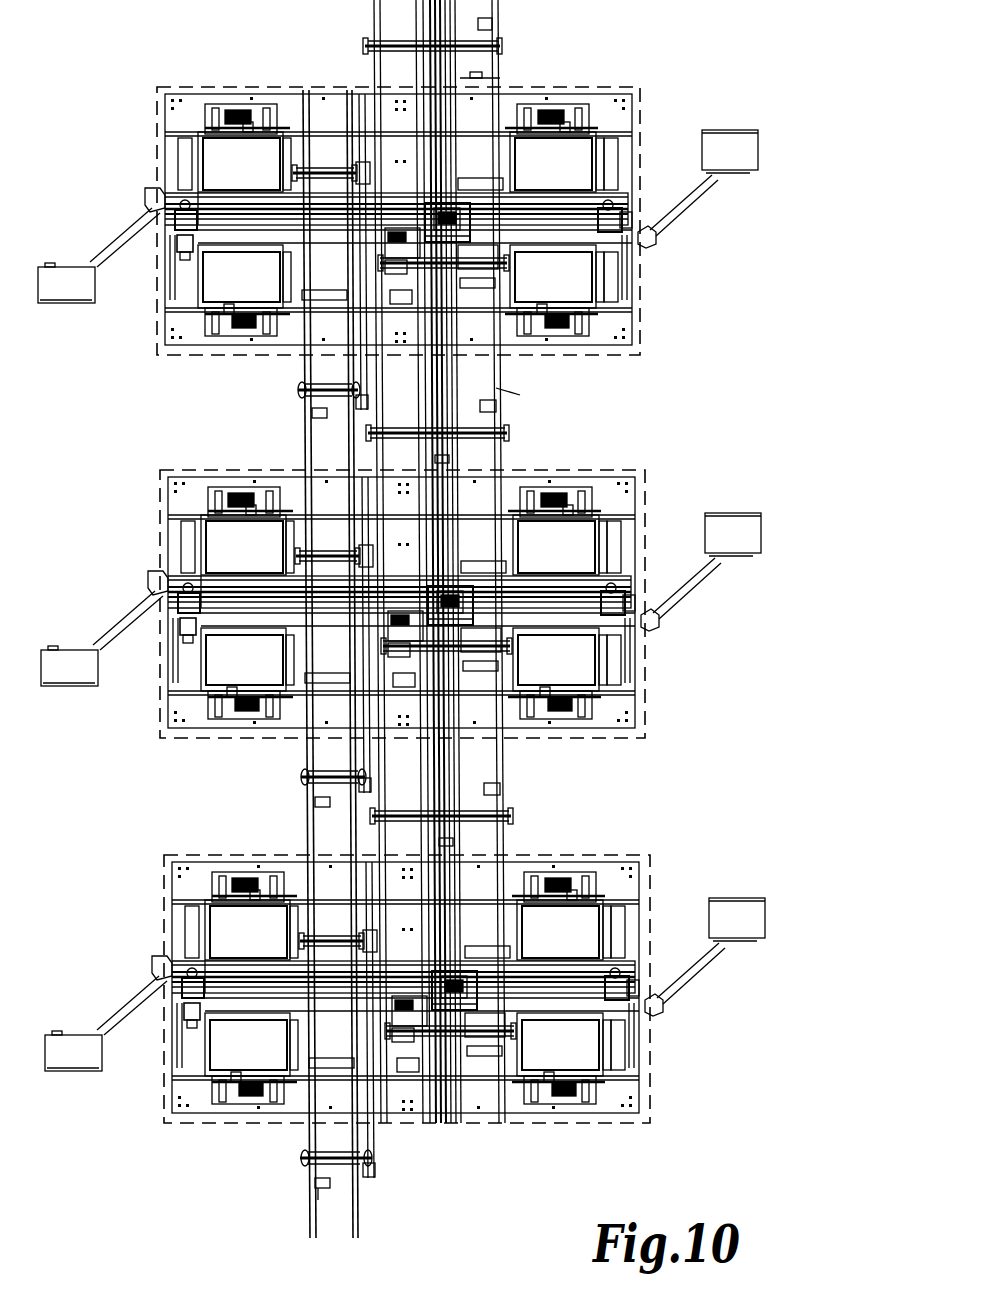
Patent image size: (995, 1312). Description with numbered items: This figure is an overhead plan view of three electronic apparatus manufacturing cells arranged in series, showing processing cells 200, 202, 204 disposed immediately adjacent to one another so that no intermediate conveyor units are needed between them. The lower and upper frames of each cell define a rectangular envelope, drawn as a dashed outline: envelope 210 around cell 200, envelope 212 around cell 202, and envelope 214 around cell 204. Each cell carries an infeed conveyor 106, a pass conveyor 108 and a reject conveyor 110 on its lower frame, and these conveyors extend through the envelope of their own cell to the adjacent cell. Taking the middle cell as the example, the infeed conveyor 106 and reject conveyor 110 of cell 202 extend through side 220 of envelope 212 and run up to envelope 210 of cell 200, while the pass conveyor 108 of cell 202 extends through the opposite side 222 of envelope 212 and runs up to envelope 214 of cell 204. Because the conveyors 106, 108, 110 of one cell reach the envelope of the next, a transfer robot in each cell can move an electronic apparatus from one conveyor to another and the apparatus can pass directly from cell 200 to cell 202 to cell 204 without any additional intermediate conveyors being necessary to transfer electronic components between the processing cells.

The infeed conveyor 106 is at (375, 442).
The pass conveyor 108 is at (300, 812).
The reject conveyor 110 is at (500, 388).
The processing cell 200 is at (186, 112).
The processing cell 202 is at (189, 495).
The processing cell 204 is at (193, 879).
The rectangular envelope 210 is at (640, 352).
The rectangular envelope 212 is at (646, 737).
The rectangular envelope 214 is at (652, 1122).
The side of envelope 220 is at (532, 467).
The side of envelope 222 is at (532, 738).